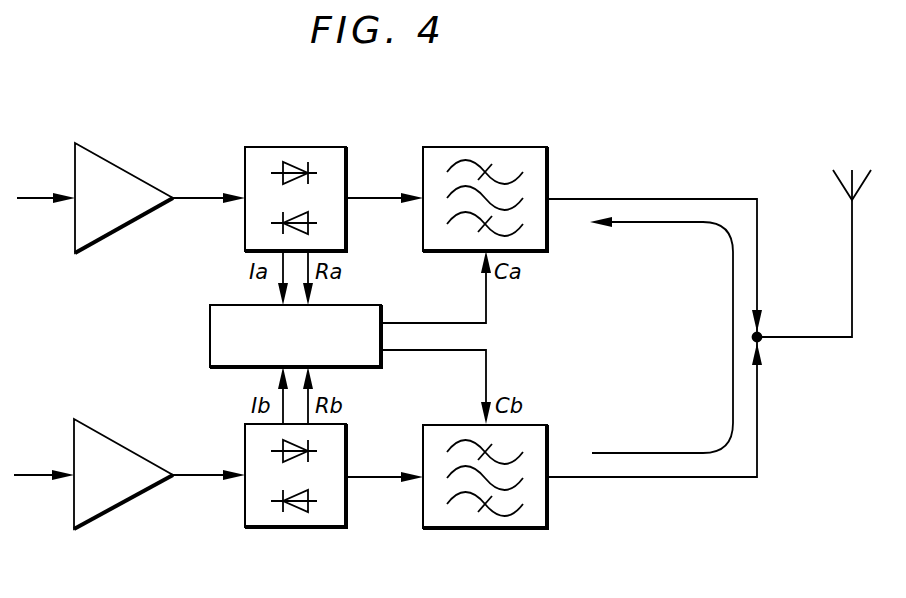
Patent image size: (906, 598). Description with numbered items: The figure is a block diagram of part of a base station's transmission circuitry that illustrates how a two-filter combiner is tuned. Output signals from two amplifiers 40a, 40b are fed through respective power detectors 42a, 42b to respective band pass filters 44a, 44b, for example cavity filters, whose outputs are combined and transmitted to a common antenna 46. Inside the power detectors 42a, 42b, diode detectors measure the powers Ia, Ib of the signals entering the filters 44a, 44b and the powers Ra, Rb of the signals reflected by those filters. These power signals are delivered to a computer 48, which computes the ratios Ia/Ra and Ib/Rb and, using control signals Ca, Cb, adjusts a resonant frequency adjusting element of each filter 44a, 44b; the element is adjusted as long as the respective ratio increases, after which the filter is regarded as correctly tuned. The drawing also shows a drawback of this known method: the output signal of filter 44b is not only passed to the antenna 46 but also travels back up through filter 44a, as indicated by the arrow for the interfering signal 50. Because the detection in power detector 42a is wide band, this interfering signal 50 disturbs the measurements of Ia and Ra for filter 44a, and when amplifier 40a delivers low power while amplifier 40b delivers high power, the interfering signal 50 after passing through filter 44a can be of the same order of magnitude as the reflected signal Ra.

The amplifier 40a is at (120, 167).
The amplifier 40b is at (116, 507).
The power detector 42a is at (296, 147).
The power detector 42b is at (294, 527).
The band pass filter 44a is at (483, 147).
The band pass filter 44b is at (479, 528).
The common antenna 46 is at (852, 264).
The computer 48 is at (210, 339).
The interfering signal 50 is at (733, 340).